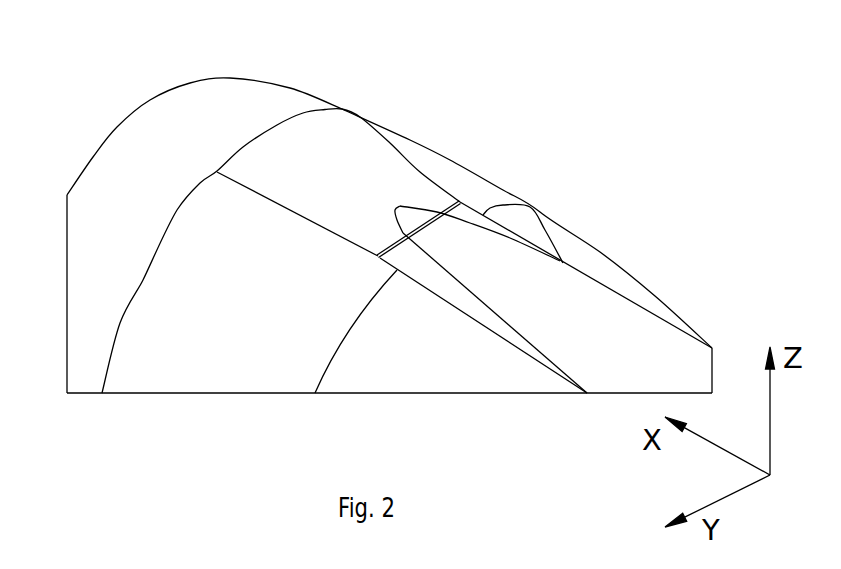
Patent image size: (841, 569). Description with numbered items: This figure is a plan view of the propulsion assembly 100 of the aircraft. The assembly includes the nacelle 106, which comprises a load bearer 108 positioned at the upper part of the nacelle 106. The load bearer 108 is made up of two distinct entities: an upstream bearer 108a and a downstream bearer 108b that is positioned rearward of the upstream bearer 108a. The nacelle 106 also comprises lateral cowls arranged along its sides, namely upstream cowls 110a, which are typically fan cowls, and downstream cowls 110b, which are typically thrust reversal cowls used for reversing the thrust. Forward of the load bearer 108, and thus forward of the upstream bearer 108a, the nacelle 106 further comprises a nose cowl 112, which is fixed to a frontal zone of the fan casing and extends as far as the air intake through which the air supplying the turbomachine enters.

The propulsion assembly 100 is at (565, 118).
The nacelle 106 is at (488, 92).
The load bearer 108 is at (632, 179).
The upstream bearer 108a is at (347, 188).
The downstream bearer 108b is at (622, 339).
The upstream cowls 110a is at (262, 328).
The downstream cowls 110b is at (447, 367).
The nose cowl 112 is at (130, 173).